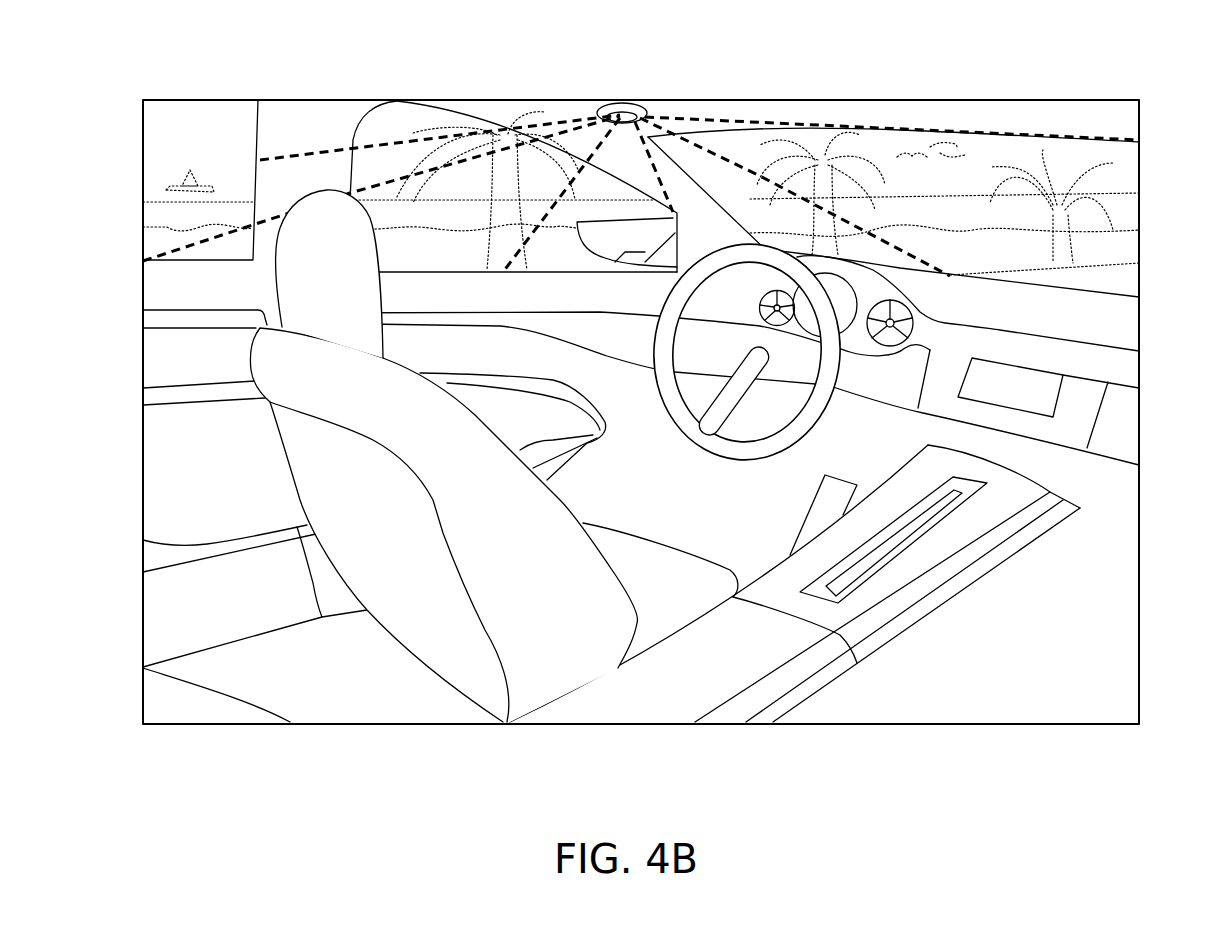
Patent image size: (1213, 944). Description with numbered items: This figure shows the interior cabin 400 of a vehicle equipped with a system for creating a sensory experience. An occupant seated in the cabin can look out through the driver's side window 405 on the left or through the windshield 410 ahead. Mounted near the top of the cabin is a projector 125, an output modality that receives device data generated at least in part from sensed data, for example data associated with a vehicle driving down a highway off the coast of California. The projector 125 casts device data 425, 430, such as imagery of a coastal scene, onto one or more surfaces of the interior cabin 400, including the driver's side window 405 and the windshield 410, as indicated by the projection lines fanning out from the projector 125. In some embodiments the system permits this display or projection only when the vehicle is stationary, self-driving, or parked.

The projector 125 is at (618, 100).
The interior cabin 400 is at (1127, 58).
The driver's side window 405 is at (474, 106).
The windshield 410 is at (898, 126).
The device data 425 is at (388, 116).
The device data 430 is at (969, 152).